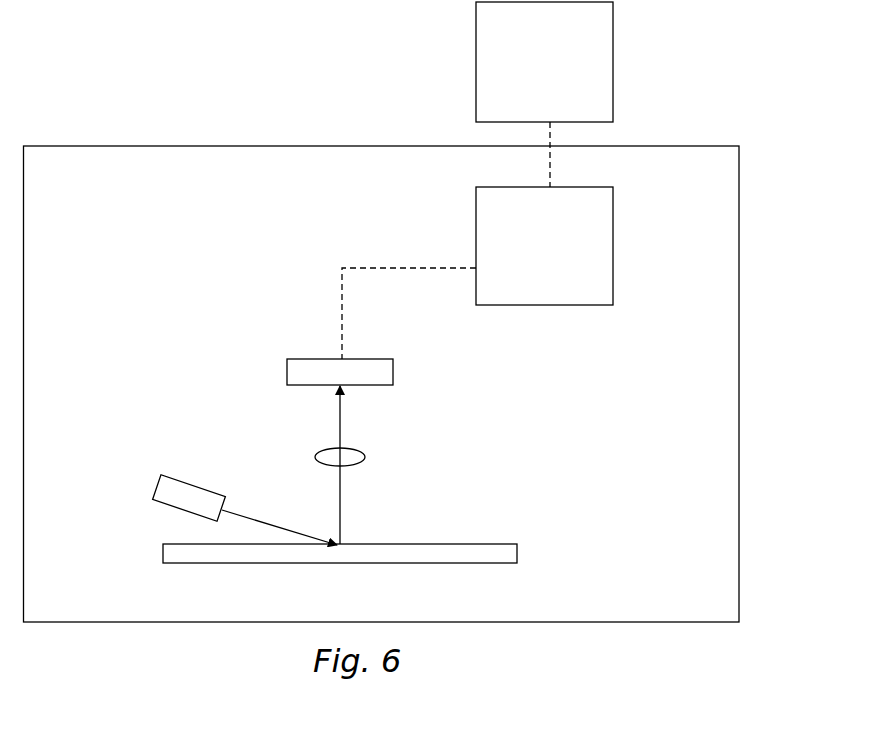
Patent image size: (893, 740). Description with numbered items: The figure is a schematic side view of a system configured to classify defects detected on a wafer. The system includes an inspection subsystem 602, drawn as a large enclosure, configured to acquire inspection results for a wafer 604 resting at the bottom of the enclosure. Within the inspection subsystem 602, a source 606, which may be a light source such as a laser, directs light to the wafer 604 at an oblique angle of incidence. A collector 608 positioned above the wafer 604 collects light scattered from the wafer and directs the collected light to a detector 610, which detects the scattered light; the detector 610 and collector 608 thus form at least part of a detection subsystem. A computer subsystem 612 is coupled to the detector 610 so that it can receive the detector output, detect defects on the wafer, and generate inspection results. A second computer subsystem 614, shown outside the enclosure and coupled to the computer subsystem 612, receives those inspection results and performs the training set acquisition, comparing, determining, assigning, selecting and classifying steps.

The inspection subsystem 602 is at (739, 283).
The wafer 604 is at (175, 544).
The source 606 is at (183, 482).
The collector 608 is at (320, 452).
The detector 610 is at (287, 375).
The computer subsystem 612 is at (477, 240).
The computer subsystem 614 is at (544, 62).